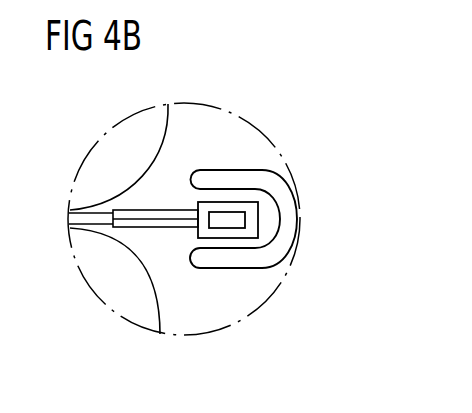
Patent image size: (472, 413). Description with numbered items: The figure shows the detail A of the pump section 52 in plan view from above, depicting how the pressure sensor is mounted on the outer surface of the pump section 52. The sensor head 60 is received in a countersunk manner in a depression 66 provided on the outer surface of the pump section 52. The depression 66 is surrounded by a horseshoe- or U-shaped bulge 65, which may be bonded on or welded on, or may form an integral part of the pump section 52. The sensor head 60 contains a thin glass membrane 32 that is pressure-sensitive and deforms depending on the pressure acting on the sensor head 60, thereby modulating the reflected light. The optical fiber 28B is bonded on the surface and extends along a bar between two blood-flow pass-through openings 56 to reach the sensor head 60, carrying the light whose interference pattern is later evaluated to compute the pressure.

The pump section 52 is at (303, 110).
The blood-flow pass-through openings 56 is at (93, 158).
The optical fiber 28B is at (101, 224).
The depression 66 is at (208, 232).
The sensor head 60 is at (223, 219).
The U-shaped bulge 65 is at (240, 182).
The glass membrane 32 is at (248, 220).
The detail A is at (289, 275).